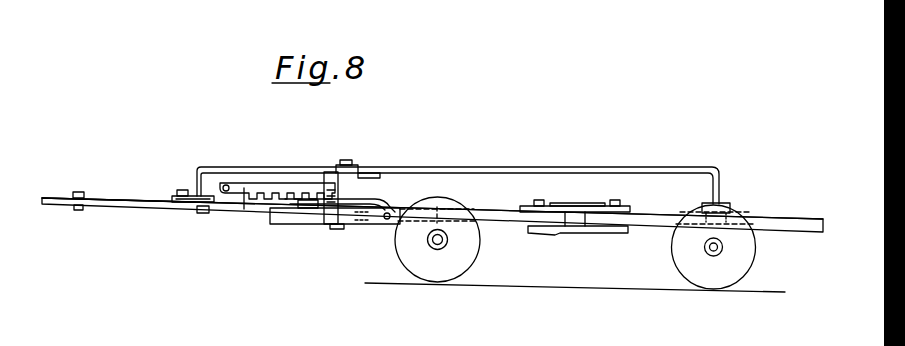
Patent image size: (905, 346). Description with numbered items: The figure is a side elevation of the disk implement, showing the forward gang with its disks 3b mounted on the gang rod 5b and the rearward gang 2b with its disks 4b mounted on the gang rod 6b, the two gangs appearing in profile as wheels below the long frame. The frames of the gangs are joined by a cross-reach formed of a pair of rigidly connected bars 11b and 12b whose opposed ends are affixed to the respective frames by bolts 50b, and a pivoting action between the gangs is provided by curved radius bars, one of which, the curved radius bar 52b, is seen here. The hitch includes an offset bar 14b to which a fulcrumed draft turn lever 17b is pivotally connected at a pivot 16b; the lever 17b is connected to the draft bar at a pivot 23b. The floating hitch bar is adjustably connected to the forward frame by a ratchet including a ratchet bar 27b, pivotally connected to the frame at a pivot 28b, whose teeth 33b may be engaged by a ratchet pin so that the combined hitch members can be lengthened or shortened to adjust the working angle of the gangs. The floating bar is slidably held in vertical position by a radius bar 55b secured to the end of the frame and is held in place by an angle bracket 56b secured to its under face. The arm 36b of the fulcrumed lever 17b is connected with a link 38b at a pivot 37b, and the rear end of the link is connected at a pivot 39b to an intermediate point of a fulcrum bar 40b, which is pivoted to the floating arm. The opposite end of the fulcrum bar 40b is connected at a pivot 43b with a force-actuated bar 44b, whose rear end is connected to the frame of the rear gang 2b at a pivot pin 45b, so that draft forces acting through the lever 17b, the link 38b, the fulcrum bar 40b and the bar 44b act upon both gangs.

The rearward gang 2b is at (804, 218).
The disks of forward gang 3b is at (470, 257).
The disks of rearward gang 4b is at (756, 262).
The gang rod 5b is at (434, 248).
The gang rod 6b is at (712, 256).
The cross-reach bar 11b is at (560, 212).
The cross-reach bar 12b is at (580, 206).
The offset bar 14b is at (149, 200).
The pivot 16b is at (80, 192).
The fulcrumed draft turn lever 17b is at (131, 205).
The pivot 23b is at (205, 212).
The ratchet bar 27b is at (243, 208).
The pivot connection of ratchet bar 28b is at (380, 225).
The teeth 33b is at (284, 200).
The arm 36b is at (184, 207).
The pivot 37b is at (183, 190).
The link 38b is at (302, 181).
The pivot 39b is at (346, 165).
The fulcrum bar 40b is at (372, 176).
The pivot 43b is at (350, 160).
The force-actuated bar 44b is at (553, 167).
The pivot pin 45b is at (718, 204).
The bolts 50b is at (539, 200).
The curved radius bar 52b is at (326, 200).
The radius bar 55b is at (302, 209).
The angle bracket 56b is at (337, 229).